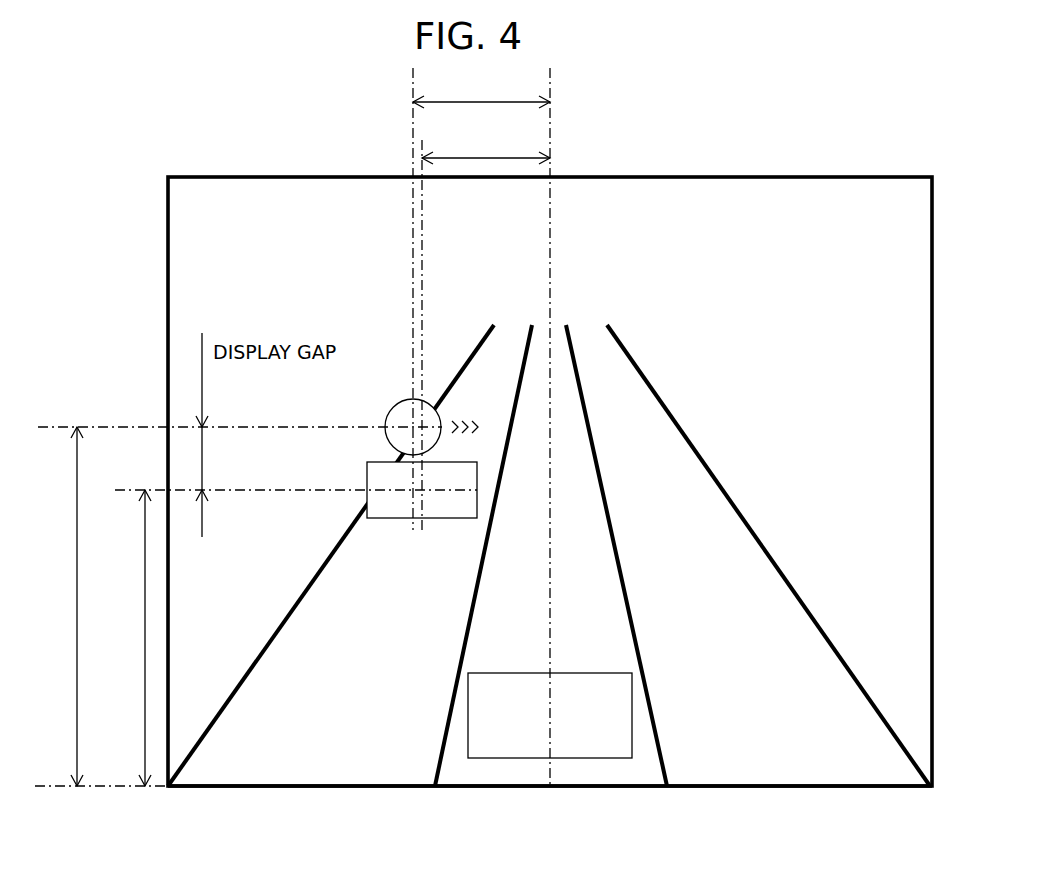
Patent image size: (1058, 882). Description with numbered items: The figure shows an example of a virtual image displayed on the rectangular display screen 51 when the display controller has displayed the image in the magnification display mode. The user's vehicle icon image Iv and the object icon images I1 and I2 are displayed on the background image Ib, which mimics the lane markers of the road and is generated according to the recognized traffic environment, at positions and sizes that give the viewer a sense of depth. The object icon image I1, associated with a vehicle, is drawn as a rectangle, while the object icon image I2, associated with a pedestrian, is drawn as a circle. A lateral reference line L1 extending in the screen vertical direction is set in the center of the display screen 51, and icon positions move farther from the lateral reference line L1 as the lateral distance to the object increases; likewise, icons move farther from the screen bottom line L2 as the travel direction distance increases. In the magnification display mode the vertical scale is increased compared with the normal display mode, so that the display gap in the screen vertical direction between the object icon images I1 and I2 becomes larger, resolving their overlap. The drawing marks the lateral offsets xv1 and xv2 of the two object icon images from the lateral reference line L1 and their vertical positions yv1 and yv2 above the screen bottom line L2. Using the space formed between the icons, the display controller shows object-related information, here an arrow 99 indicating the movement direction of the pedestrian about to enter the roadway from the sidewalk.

The display screen 51 is at (777, 179).
The arrow 99 is at (463, 371).
The object icon image I1 is at (370, 510).
The object icon image I2 is at (386, 418).
The background image Ib is at (686, 433).
The user's vehicle icon image Iv is at (632, 710).
The lateral reference line L1 is at (551, 262).
The screen bottom line L2 is at (756, 785).
The horizontal offset of first image xv1 is at (486, 146).
The horizontal offset of second image xv2 is at (481, 90).
The vertical position of first image yv1 is at (121, 638).
The vertical position of second image yv2 is at (50, 606).